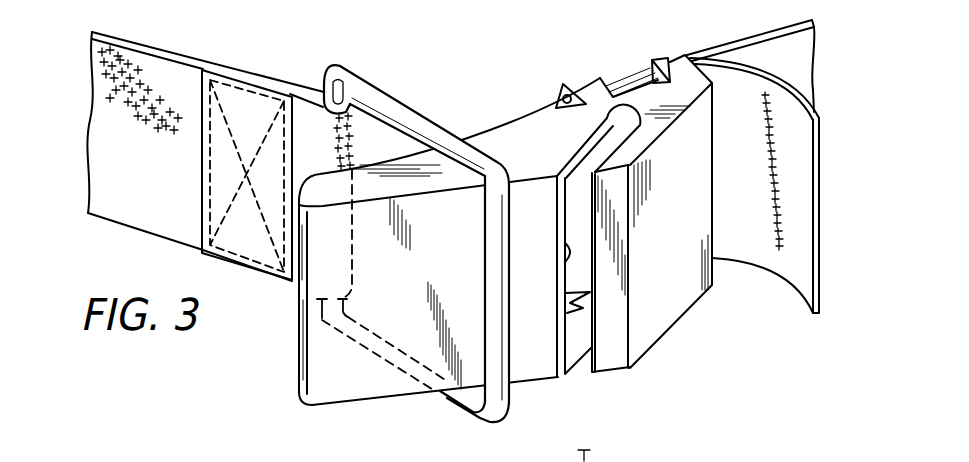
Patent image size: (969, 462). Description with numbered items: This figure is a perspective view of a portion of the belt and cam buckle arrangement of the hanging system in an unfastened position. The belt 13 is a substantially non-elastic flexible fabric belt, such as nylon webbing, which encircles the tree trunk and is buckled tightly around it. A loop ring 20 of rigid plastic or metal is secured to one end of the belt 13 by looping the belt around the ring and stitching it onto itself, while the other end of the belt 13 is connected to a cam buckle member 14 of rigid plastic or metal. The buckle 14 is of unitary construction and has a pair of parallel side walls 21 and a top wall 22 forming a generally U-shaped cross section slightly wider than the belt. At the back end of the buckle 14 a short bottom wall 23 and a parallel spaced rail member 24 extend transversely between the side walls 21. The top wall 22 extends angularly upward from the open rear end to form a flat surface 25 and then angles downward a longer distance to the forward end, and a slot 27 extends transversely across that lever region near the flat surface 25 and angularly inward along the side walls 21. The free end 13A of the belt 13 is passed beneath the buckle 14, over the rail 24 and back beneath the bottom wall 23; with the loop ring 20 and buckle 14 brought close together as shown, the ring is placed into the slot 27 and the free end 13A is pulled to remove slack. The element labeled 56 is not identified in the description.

The belt 13 is at (93, 151).
The free end of the belt 13A is at (823, 208).
The cam buckle member 14 is at (672, 334).
The loop ring 20 is at (384, 96).
The side walls 21 is at (480, 138).
The top wall 22 is at (430, 273).
The bottom wall 23 is at (663, 60).
The rail member 24 is at (573, 86).
The flat surface 25 is at (680, 287).
The slot 27 is at (568, 247).
The rounded edge 56 is at (298, 350).